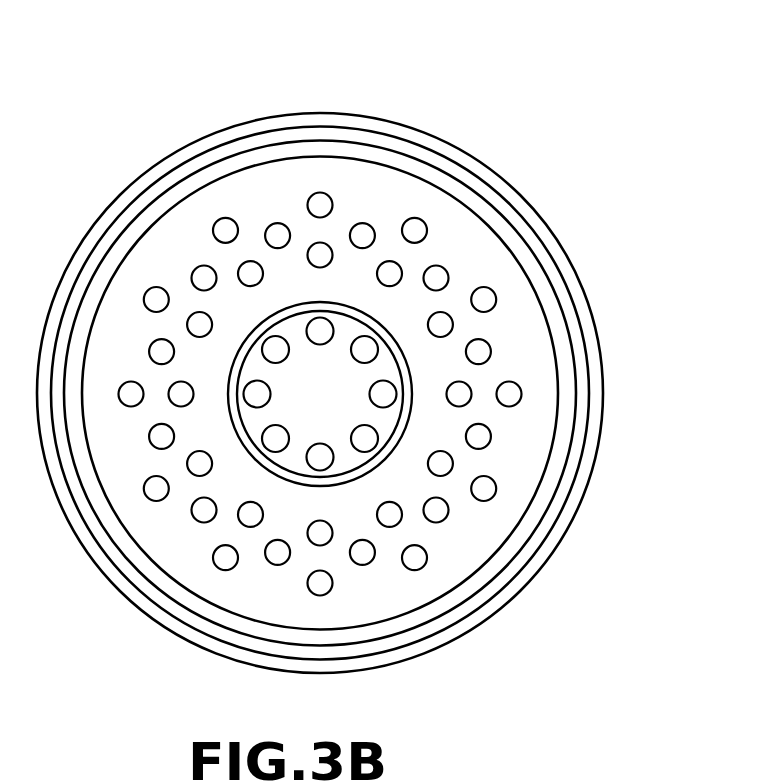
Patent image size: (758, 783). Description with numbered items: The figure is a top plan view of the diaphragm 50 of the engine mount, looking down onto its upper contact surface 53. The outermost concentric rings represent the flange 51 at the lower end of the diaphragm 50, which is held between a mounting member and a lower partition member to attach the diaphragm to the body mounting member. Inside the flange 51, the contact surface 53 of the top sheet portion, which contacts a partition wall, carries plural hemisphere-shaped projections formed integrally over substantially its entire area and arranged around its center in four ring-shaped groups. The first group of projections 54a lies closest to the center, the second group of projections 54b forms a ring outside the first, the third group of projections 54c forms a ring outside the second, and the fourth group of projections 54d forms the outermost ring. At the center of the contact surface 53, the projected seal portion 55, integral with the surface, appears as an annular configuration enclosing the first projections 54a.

The diaphragm 50 is at (660, 197).
The flange 51 is at (592, 308).
The contact surface 53 is at (388, 205).
The first group of projections 54a is at (372, 440).
The second group of projections 54b is at (197, 320).
The third group of projections 54c is at (368, 560).
The fourth group of projections 54d is at (222, 565).
The projected seal portion 55 is at (295, 308).